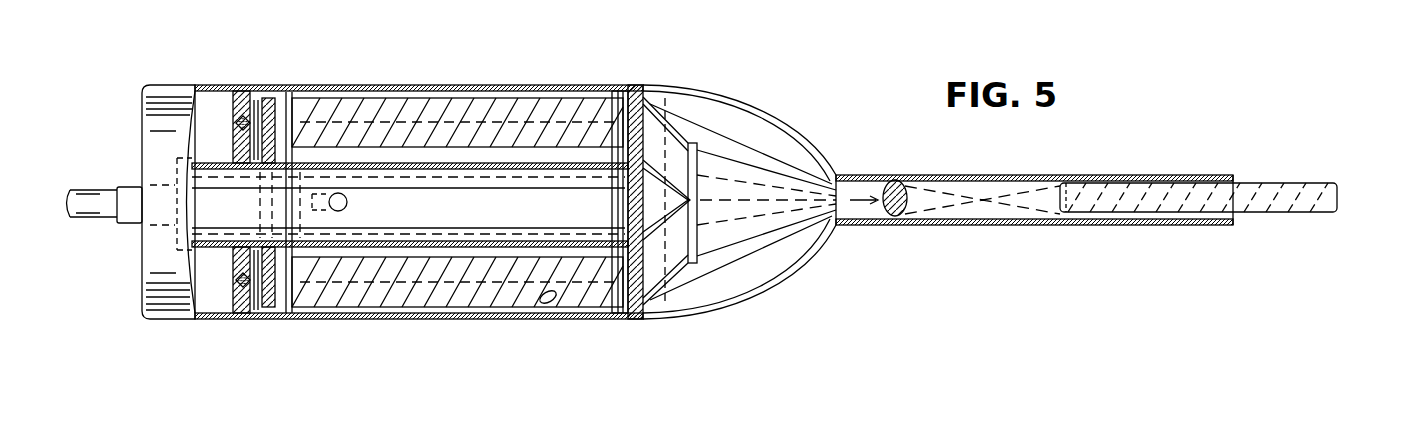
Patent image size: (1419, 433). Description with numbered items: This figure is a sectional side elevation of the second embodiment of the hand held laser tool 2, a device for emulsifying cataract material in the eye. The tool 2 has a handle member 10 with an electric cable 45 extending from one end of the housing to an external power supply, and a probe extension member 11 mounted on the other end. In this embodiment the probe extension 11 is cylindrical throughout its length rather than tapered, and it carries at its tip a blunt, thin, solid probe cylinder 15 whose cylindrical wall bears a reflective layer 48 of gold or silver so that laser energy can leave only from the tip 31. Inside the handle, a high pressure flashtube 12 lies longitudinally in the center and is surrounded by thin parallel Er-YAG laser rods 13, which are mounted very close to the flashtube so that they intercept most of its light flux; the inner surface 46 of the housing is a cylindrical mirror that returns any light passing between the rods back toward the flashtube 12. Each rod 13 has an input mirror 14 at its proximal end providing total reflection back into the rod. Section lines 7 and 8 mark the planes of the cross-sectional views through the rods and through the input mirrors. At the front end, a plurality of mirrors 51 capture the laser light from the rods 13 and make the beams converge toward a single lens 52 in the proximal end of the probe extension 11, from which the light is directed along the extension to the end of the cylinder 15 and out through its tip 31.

The hand held laser tool 2 is at (739, 195).
The section line 7- 7 is at (415, 377).
The section line 8- 8 is at (252, 377).
The handle member 10 is at (160, 100).
The probe extension member 11 is at (1030, 226).
The flashtube 12 is at (562, 222).
The laser rods 13 is at (570, 108).
The input mirror 14 is at (258, 95).
The probe cylinder 15 is at (1260, 206).
The tip 31 is at (1340, 199).
The electric cable 45 is at (96, 222).
The inner surface 46 is at (552, 300).
The reflective layer 48 is at (1266, 184).
The mirrors 51 is at (679, 166).
The lens 52 is at (898, 210).